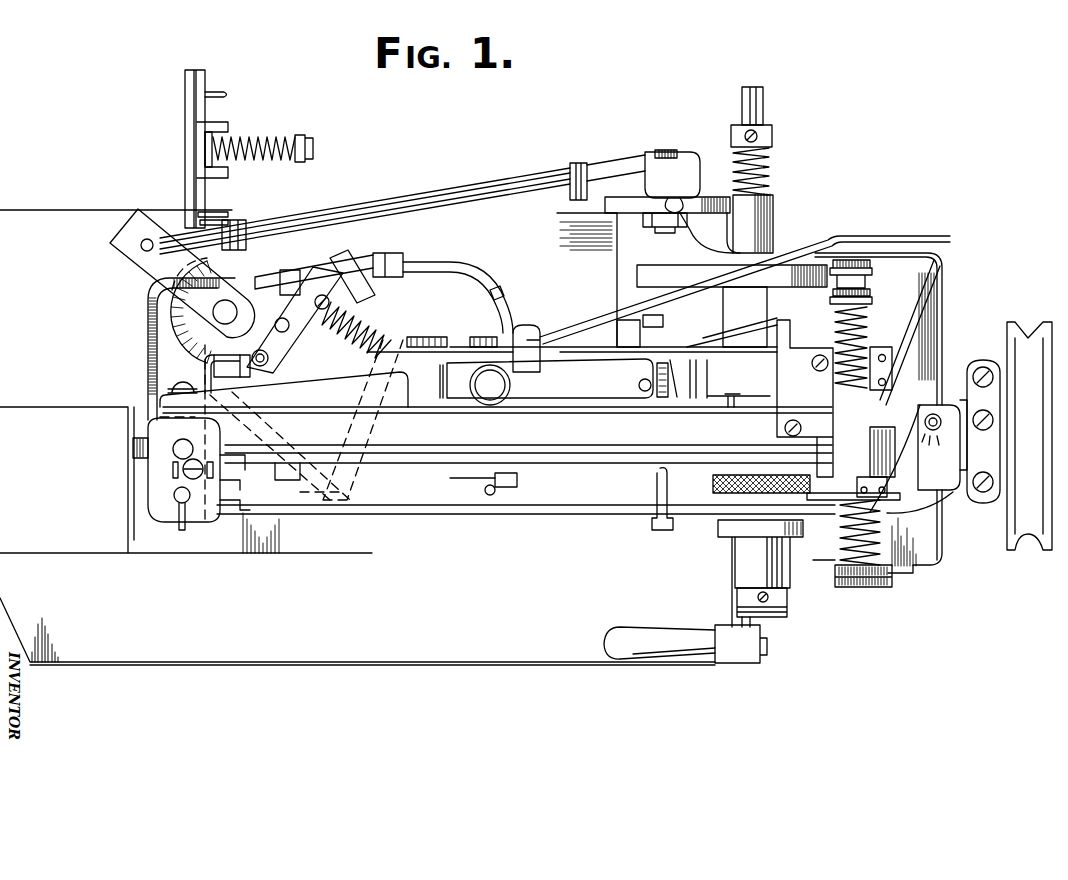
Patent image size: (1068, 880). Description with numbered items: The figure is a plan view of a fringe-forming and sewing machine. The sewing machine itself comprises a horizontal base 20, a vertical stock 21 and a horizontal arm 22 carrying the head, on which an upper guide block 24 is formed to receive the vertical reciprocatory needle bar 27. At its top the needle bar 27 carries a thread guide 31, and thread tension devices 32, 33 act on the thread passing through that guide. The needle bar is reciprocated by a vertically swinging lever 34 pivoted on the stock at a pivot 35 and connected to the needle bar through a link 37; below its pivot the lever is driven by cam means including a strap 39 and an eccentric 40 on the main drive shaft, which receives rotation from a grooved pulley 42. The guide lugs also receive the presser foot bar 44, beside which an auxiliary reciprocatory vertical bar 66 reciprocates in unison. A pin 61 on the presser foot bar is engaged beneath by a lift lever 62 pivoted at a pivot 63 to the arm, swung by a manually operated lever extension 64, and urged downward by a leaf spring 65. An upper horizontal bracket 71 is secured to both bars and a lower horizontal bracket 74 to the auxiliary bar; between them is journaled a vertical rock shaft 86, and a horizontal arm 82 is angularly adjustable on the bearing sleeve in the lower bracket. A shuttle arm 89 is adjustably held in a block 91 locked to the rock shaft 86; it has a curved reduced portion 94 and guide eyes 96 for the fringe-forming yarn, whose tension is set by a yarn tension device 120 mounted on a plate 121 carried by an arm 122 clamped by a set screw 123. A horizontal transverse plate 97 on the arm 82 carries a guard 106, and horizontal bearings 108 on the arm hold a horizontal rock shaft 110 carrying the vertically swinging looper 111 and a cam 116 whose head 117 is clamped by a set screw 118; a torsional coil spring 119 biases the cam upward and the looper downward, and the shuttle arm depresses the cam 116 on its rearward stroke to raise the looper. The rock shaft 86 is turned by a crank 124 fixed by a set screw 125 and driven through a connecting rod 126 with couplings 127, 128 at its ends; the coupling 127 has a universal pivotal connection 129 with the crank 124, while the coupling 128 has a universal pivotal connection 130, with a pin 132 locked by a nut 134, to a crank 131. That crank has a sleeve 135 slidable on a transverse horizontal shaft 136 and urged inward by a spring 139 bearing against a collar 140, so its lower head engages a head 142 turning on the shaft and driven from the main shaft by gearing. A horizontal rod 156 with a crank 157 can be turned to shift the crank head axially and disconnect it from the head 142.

The horizontal base 20 is at (466, 608).
The vertical stock 21 is at (945, 315).
The horizontal arm 22 is at (497, 421).
The upper guide block 24 is at (143, 505).
The needle bar 27 is at (177, 507).
The thread guide 31 is at (182, 547).
The thread tension device 32 is at (830, 500).
The thread tension device 33 is at (899, 496).
The vertically swinging lever 34 is at (592, 514).
The pivot 35 is at (731, 550).
The link 37 is at (249, 526).
The strap 39 is at (983, 367).
The eccentric 40 is at (963, 387).
The grooved pulley 42 is at (1027, 330).
The presser foot bar 44 is at (177, 453).
The pin 61 is at (180, 377).
The lift lever 62 is at (307, 370).
The pivot 63 is at (440, 342).
The lever extension 64 is at (567, 327).
The leaf spring 65 is at (357, 388).
The auxiliary reciprocatory vertical bar 66 is at (195, 381).
The upper horizontal bracket 71 is at (214, 365).
The lower horizontal bracket 74 is at (157, 325).
The horizontal arm 82 is at (303, 400).
The vertical rock shaft 86 is at (233, 300).
The shuttle arm 89 is at (340, 272).
The block 91 is at (283, 280).
The curved reduced portion 94 is at (480, 255).
The guide eyes 96 is at (503, 297).
The horizontal transverse plate 97 is at (358, 504).
The guard 106 is at (297, 438).
The horizontal bearing 108 is at (300, 283).
The horizontal rock shaft 110 is at (373, 350).
The looper 111 is at (403, 437).
The cam 116 is at (367, 287).
The head 117 is at (353, 253).
The set screw 118 is at (317, 240).
The torsional coil spring 119 is at (357, 337).
The yarn tension device 120 is at (217, 123).
The plate 121 is at (185, 110).
The arm 122 is at (143, 303).
The set screw 123 is at (132, 446).
The crank 124 is at (147, 260).
The set screw 125 is at (292, 358).
The connecting rod 126 is at (447, 193).
The coupling 127 is at (233, 220).
The coupling 128 is at (588, 173).
The universal pivotal connection 129 is at (138, 262).
The universal pivotal connection 130 is at (660, 158).
The crank 131 is at (700, 195).
The pin 132 is at (675, 173).
The nut 134 is at (650, 217).
The sleeve 135 is at (772, 217).
The transverse horizontal shaft 136 is at (767, 103).
The spring 139 is at (770, 160).
The collar 140 is at (773, 130).
The head 142 is at (797, 282).
The horizontal rod 156 is at (732, 602).
The crank 157 is at (627, 635).